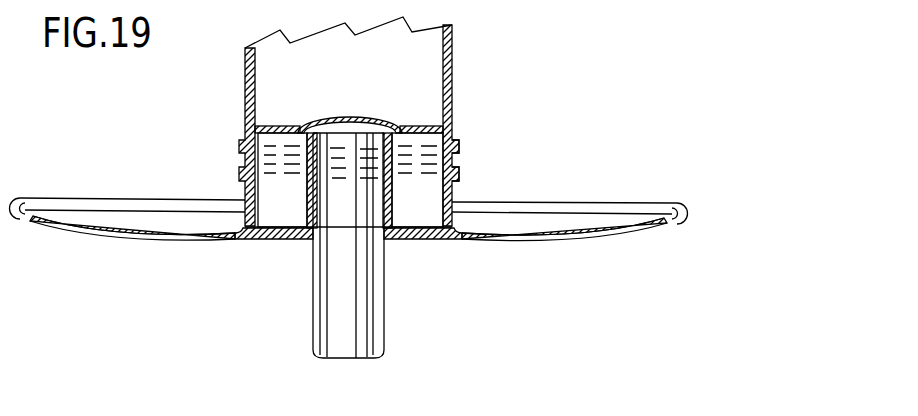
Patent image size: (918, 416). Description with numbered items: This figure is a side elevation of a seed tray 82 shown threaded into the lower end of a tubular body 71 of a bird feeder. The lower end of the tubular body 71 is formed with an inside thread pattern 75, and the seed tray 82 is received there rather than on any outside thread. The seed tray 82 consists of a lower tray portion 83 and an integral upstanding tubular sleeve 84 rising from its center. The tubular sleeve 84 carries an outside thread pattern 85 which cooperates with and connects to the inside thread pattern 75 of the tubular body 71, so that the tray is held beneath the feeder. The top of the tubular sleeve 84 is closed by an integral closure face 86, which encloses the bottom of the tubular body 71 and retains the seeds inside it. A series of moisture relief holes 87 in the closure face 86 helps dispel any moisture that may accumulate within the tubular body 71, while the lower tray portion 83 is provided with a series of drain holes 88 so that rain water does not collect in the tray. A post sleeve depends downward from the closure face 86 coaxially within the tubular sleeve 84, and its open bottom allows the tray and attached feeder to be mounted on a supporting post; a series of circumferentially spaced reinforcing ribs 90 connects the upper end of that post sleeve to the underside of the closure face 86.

The tubular body 71 is at (459, 77).
The inside thread pattern 75 is at (263, 163).
The seed tray 82 is at (289, 249).
The lower tray portion 83 is at (122, 218).
The tubular sleeve 84 is at (436, 222).
The outside thread pattern 85 is at (458, 178).
The closure face 86 is at (355, 118).
The moisture relief holes 87 is at (285, 123).
The drain holes 88 is at (158, 241).
The reinforcing ribs 90 is at (393, 135).